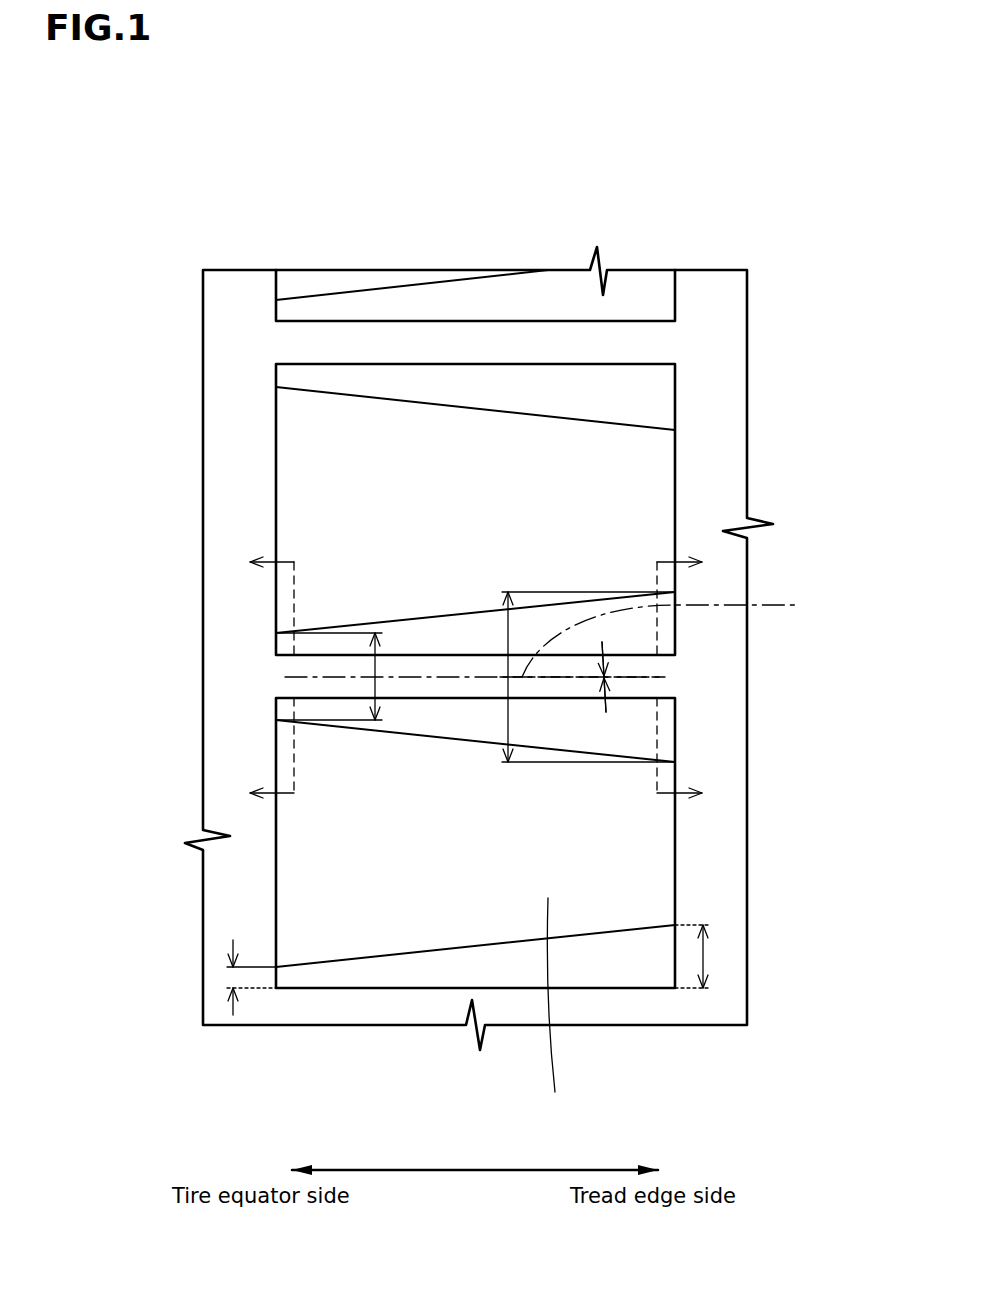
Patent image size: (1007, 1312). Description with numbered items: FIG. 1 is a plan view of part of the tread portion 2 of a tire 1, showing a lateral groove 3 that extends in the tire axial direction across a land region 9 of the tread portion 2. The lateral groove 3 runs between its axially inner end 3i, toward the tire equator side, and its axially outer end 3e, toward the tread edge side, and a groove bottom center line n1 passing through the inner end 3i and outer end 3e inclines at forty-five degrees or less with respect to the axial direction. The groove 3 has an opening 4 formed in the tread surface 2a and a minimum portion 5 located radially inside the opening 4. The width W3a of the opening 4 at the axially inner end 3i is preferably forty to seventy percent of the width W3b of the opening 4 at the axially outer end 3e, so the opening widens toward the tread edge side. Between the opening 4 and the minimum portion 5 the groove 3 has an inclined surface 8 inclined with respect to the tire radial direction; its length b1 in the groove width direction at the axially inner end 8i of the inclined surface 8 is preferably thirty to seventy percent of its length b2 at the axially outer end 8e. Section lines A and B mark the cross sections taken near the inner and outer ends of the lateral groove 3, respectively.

The tire 1 is at (755, 195).
The tread portion 2 is at (730, 338).
The tread surface 2a is at (612, 507).
The lateral groove 3 is at (403, 584).
The axially inner end 3i is at (285, 677).
The axially outer end 3e is at (677, 677).
The opening 4 is at (532, 308).
The minimum portion 5 is at (393, 322).
The inclined surface 8 is at (487, 898).
The axially inner end of the inclined surface 8i is at (272, 963).
The axially outer end of the inclined surface 8e is at (690, 915).
The land region 9 is at (547, 1015).
The groove bottom center line n1 is at (685, 633).
The width of the opening at the axially inner end W3a is at (365, 668).
The width of the opening at the axially outer end W3b is at (555, 677).
The length of the inclined surface at the axially inner end b1 is at (233, 972).
The length of the inclined surface at the axially outer end b2 is at (703, 955).
The section line A is at (258, 678).
The section line B is at (692, 678).